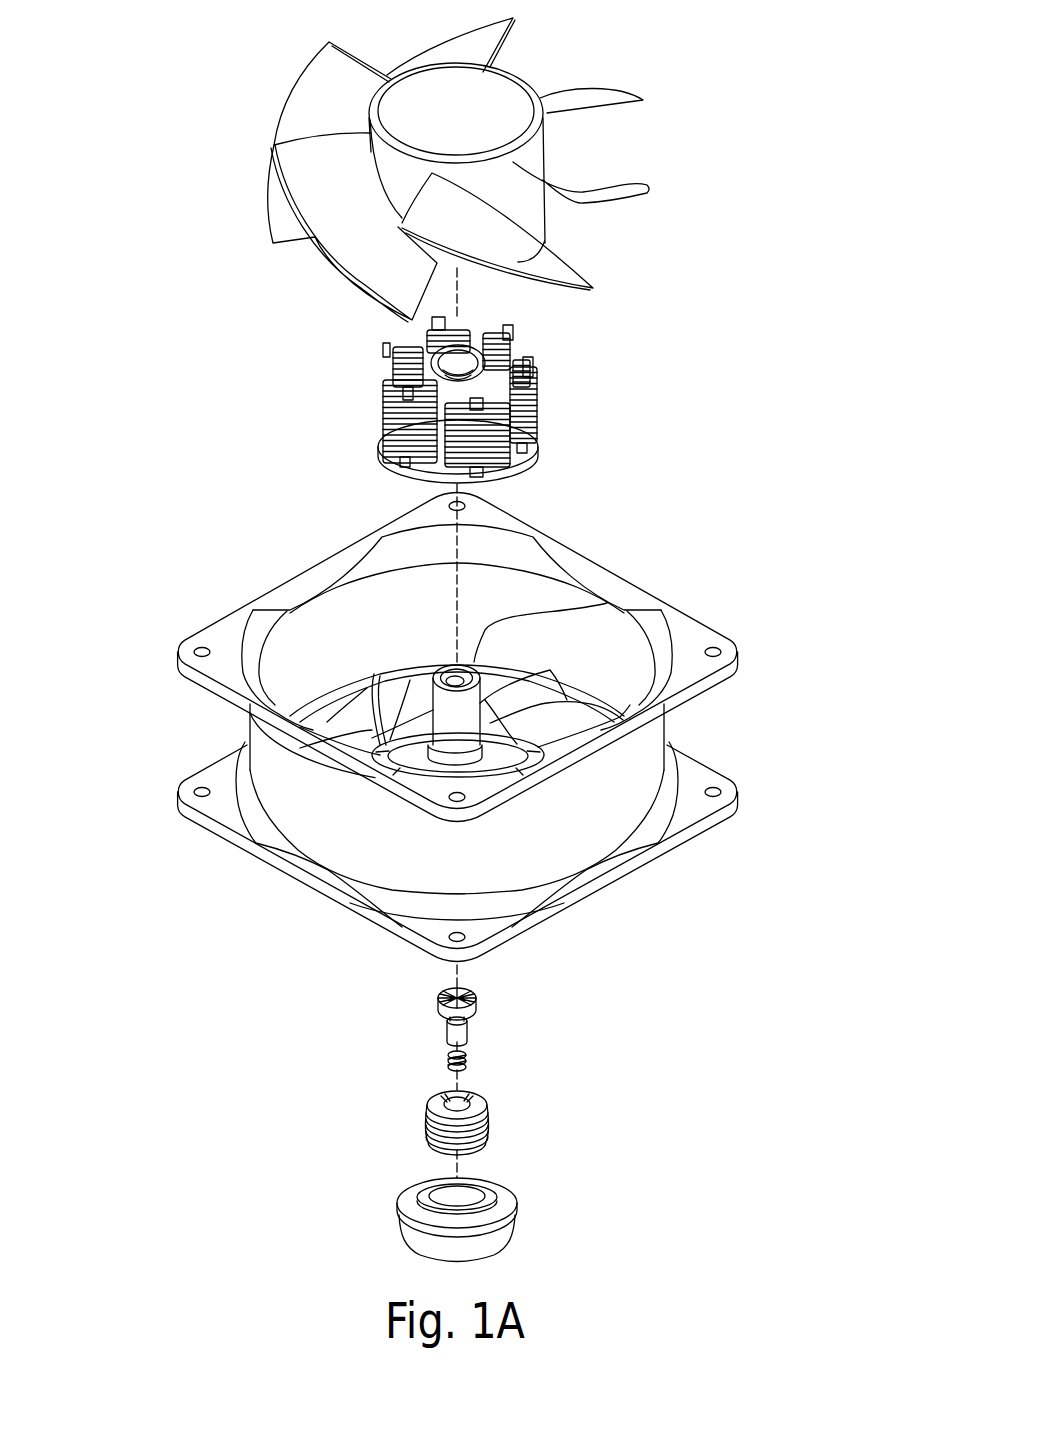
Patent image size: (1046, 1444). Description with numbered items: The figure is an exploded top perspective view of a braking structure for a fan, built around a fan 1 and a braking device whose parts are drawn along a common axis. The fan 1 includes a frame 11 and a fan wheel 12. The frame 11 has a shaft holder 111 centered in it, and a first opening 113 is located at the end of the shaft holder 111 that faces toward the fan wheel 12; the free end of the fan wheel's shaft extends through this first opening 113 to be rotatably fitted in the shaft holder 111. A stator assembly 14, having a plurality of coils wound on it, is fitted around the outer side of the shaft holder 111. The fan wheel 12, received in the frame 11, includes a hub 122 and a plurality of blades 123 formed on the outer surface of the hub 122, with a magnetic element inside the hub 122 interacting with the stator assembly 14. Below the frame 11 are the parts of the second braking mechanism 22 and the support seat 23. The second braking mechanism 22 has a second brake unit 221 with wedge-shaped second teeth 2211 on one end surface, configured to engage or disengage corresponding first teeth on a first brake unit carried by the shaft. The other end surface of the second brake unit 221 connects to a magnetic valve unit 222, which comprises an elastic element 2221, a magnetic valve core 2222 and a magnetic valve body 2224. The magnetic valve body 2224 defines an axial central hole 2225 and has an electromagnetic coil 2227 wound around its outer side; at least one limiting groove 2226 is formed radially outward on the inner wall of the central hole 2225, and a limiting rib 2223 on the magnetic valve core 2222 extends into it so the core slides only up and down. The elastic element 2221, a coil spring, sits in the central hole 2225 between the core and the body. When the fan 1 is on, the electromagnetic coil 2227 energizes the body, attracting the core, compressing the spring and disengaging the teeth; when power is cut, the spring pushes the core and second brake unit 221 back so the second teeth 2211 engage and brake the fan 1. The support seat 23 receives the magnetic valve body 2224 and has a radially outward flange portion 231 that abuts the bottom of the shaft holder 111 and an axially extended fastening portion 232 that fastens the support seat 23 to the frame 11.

The fan 1 is at (676, 490).
The frame 11 is at (222, 640).
The shaft holder 111 is at (430, 681).
The first opening 113 is at (479, 656).
The fan wheel 12 is at (616, 137).
The hub 122 is at (504, 92).
The blades 123 is at (598, 98).
The stator assembly 14 is at (546, 360).
The second braking mechanism 22 is at (537, 1063).
The second brake unit 221 is at (476, 1000).
The second teeth 2211 is at (456, 990).
The magnetic valve unit 222 is at (178, 1226).
The elastic element 2221 is at (449, 1060).
The magnetic valve core 2222 is at (466, 1030).
The limiting rib 2223 is at (448, 1028).
The magnetic valve body 2224 is at (428, 1106).
The central hole 2225 is at (473, 1092).
The limiting groove 2226 is at (441, 1091).
The electromagnetic coil 2227 is at (424, 1130).
The support seat 23 is at (530, 1193).
The flange portion 231 is at (408, 1218).
The fastening portion 232 is at (494, 1203).